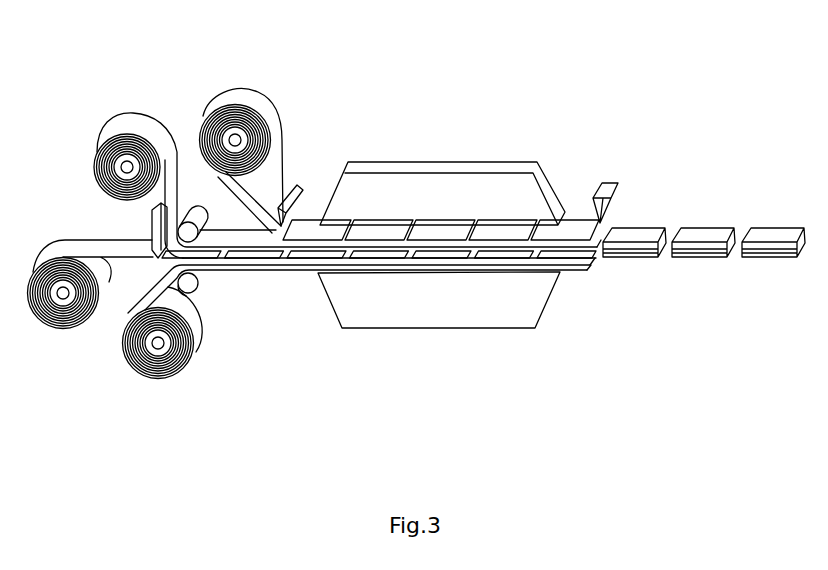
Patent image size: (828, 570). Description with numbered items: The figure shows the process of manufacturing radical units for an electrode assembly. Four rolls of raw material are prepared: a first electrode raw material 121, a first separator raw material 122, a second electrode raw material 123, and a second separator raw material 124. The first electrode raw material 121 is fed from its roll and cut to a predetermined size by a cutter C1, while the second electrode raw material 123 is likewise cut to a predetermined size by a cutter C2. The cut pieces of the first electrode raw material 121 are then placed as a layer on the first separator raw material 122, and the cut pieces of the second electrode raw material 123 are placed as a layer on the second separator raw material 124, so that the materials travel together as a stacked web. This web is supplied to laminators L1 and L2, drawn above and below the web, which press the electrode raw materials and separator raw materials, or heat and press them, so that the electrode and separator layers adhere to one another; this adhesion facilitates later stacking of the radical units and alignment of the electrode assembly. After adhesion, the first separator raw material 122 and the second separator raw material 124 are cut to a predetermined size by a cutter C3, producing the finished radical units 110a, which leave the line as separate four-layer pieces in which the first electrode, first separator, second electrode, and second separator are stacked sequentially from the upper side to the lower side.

The first electrode raw material 121 is at (243, 90).
The first separator raw material 122 is at (134, 120).
The second electrode raw material 123 is at (62, 247).
The second separator raw material 124 is at (198, 325).
The cutter C1 is at (302, 185).
The cutter C2 is at (152, 233).
The cutter C3 is at (605, 183).
The laminator L1 is at (439, 163).
The laminator L2 is at (432, 317).
The radical unit 110a is at (773, 257).